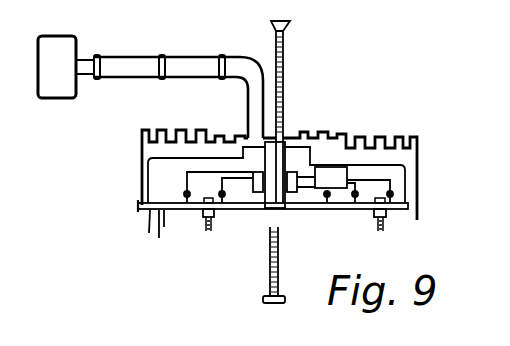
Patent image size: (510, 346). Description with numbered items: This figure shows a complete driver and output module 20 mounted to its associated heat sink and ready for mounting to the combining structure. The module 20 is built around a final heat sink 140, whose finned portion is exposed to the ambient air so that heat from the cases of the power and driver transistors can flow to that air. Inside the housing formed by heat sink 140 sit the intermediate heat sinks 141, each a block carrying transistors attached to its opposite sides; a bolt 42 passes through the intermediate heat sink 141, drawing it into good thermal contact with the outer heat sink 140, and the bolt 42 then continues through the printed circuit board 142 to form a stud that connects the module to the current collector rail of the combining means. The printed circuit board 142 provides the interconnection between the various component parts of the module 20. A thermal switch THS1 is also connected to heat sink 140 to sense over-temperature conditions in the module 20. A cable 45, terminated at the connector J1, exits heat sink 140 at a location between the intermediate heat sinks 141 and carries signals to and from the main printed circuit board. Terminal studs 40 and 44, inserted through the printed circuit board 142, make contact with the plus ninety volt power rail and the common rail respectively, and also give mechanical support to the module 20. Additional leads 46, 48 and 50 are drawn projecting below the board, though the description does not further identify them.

The connector J1 is at (66, 67).
The cable 45 is at (189, 59).
The bolt 42 is at (284, 63).
The driver and output module 20 is at (410, 203).
The final heat sink 140 is at (203, 138).
The intermediate heat sink 141 is at (273, 193).
The printed circuit board 142 is at (338, 210).
The thermal switch THS1 is at (333, 172).
The terminal stud 40 is at (212, 226).
The terminal stud 44 is at (384, 225).
The lead 46 is at (150, 217).
The lead 48 is at (159, 232).
The lead 50 is at (166, 213).